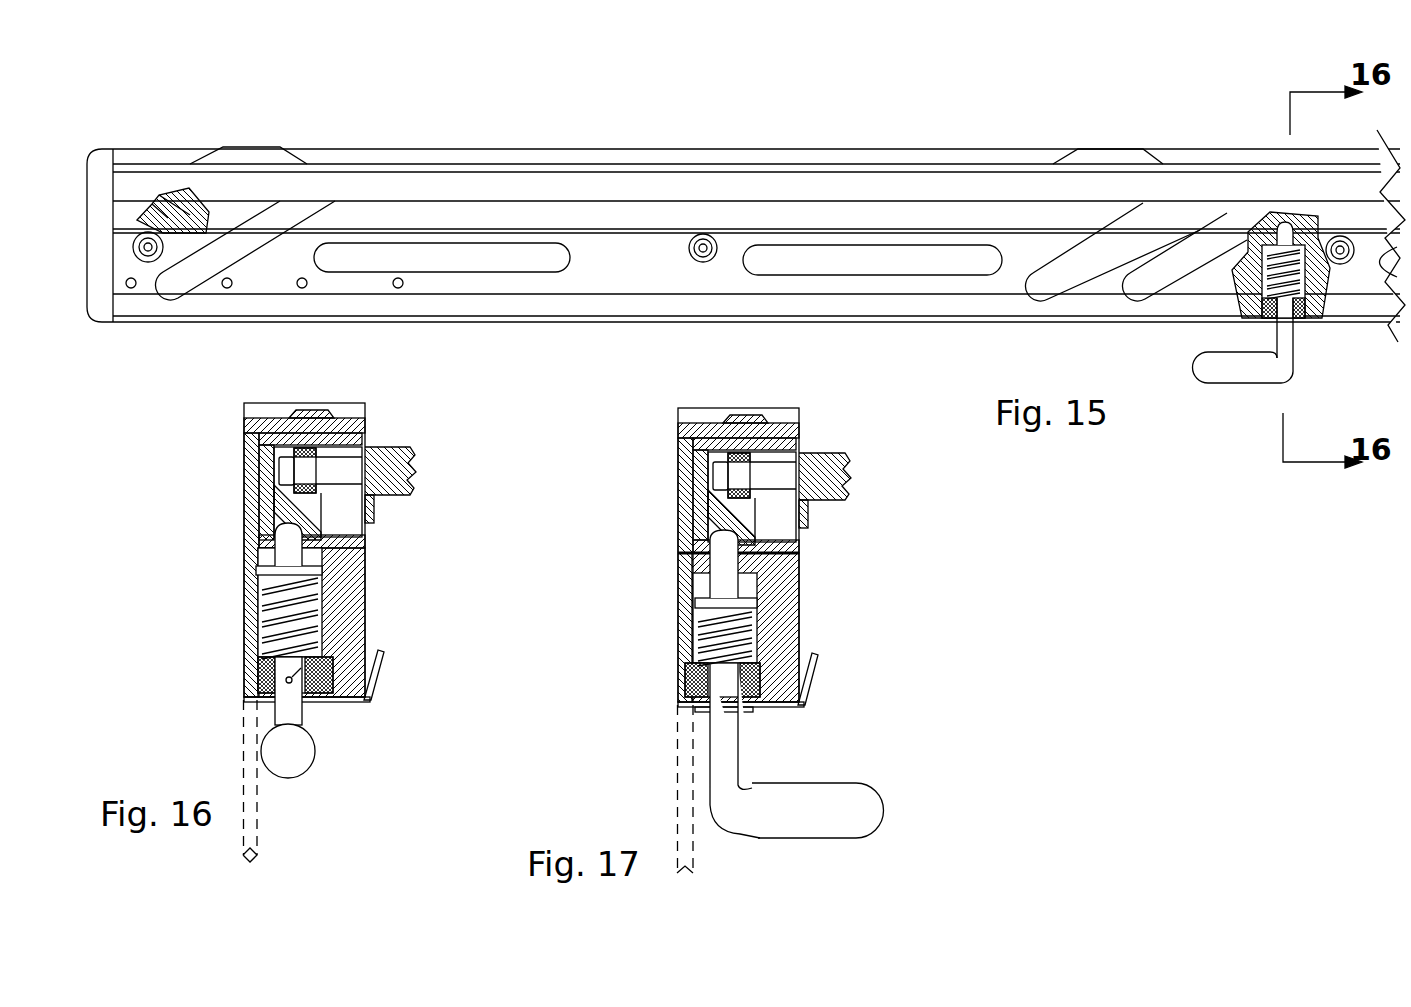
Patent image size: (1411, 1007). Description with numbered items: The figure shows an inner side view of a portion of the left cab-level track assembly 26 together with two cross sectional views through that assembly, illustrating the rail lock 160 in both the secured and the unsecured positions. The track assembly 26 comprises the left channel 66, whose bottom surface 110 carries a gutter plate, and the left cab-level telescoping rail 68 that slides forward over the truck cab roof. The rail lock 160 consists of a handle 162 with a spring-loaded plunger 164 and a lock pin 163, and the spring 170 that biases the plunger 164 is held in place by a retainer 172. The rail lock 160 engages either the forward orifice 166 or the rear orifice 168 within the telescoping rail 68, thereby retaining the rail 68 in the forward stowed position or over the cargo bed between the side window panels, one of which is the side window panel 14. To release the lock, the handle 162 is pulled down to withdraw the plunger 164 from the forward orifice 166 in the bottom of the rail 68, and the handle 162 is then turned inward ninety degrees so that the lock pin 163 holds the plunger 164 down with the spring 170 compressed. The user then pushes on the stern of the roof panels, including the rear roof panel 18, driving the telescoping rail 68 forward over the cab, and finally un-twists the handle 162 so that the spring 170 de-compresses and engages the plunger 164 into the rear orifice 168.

In FIG. 16, the side window panel 14 is at (240, 722).
In FIG. 16, the rear roof panel 18 is at (408, 496).
In FIG. 17, the rear roof panel 18 is at (838, 498).
In FIG. 15, the cab-level left track assembly 26 is at (648, 135).
In FIG. 16, the left channel 66 is at (342, 403).
In FIG. 17, the left channel 66 is at (757, 408).
In FIG. 16, the left cab-level telescoping rail 68 is at (270, 467).
In FIG. 17, the left cab-level telescoping rail 68 is at (686, 478).
In FIG. 16, the bottom surface 110 is at (342, 702).
In FIG. 17, the bottom surface 110 is at (778, 705).
In FIG. 15, the rail lock 160 is at (1242, 347).
In FIG. 16, the rail lock 160 is at (295, 567).
In FIG. 17, the rail lock 160 is at (727, 597).
In FIG. 15, the handle 162 is at (1247, 378).
In FIG. 16, the handle 162 is at (282, 762).
In FIG. 17, the handle 162 is at (815, 800).
In FIG. 16, the lock pin 163 is at (363, 620).
In FIG. 17, the lock pin 163 is at (692, 713).
In FIG. 15, the spring-loaded plunger 164 is at (1292, 226).
In FIG. 16, the spring-loaded plunger 164 is at (290, 540).
In FIG. 17, the spring-loaded plunger 164 is at (715, 553).
In FIG. 15, the forward orifice 166 is at (1243, 226).
In FIG. 16, the forward orifice 166 is at (272, 522).
In FIG. 17, the forward orifice 166 is at (705, 545).
In FIG. 15, the rear orifice 168 is at (188, 222).
In FIG. 15, the spring 170 is at (1243, 280).
In FIG. 16, the spring 170 is at (256, 632).
In FIG. 17, the spring 170 is at (682, 622).
In FIG. 15, the retainer 172 is at (1328, 312).
In FIG. 16, the retainer 172 is at (248, 688).
In FIG. 17, the retainer 172 is at (682, 690).